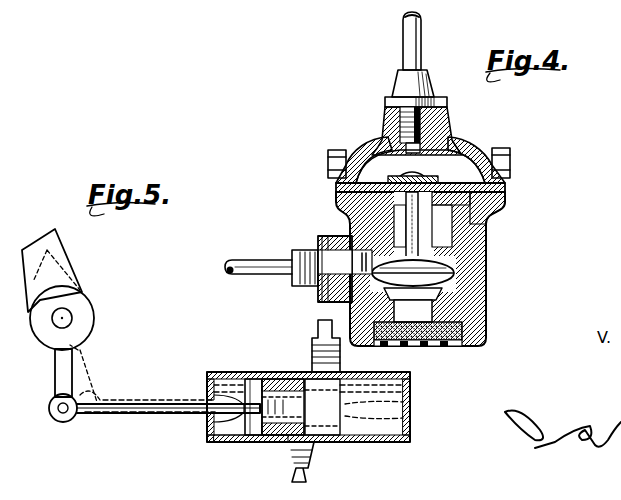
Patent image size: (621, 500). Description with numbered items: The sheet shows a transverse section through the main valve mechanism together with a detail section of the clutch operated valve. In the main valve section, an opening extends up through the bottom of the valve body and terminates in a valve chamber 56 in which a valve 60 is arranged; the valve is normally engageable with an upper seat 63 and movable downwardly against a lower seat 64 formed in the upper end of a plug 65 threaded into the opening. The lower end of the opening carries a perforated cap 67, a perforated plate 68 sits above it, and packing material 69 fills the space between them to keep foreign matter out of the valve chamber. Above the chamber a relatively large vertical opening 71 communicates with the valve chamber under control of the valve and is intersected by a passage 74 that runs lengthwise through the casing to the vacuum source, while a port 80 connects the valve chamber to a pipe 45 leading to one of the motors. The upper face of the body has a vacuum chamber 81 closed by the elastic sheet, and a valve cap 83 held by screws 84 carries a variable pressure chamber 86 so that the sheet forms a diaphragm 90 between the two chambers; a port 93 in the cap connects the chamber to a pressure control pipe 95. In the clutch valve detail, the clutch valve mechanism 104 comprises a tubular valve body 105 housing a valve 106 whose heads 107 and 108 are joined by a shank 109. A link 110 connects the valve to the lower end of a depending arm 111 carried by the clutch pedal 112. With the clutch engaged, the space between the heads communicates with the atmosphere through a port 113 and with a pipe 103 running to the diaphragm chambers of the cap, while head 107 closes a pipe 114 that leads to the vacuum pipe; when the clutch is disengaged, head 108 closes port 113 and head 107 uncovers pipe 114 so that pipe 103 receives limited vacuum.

In FIG. 4, the pressure control pipe 95 is at (421, 44).
In FIG. 4, the port 93 is at (392, 134).
In FIG. 4, the variable pressure chamber 86 is at (453, 143).
In FIG. 4, the valve cap 83 is at (356, 156).
In FIG. 4, the diaphragm 90 is at (478, 143).
In FIG. 4, the screw 84 is at (507, 160).
In FIG. 4, the vacuum chamber 81 is at (505, 190).
In FIG. 4, the upper seat 63 is at (487, 220).
In FIG. 4, the valve 60 is at (487, 245).
In FIG. 4, the passage 74 is at (403, 208).
In FIG. 4, the valve chamber 56 is at (484, 270).
In FIG. 4, the lower seat 64 is at (487, 290).
In FIG. 4, the plug 65 is at (487, 306).
In FIG. 4, the perforated plate 68 is at (487, 329).
In FIG. 4, the perforated cap 67 is at (432, 340).
In FIG. 4, the packing material 69 is at (444, 330).
In FIG. 4, the port 80 is at (340, 240).
In FIG. 4, the opening 71 is at (360, 229).
In FIG. 4, the pipe 45 is at (247, 262).
In FIG. 5, the clutch pedal 112 is at (70, 258).
In FIG. 5, the depending arm 111 is at (68, 372).
In FIG. 5, the link 110 is at (162, 403).
In FIG. 5, the tubular valve body 105 is at (378, 373).
In FIG. 5, the clutch valve mechanism 104 is at (205, 372).
In FIG. 5, the port 113 is at (263, 378).
In FIG. 5, the shank 109 is at (285, 378).
In FIG. 5, the pipe 114 is at (318, 333).
In FIG. 5, the pipe 103 is at (297, 478).
In FIG. 5, the valve 106 is at (348, 407).
In FIG. 5, the valve head 107 is at (351, 419).
In FIG. 5, the valve head 108 is at (252, 442).